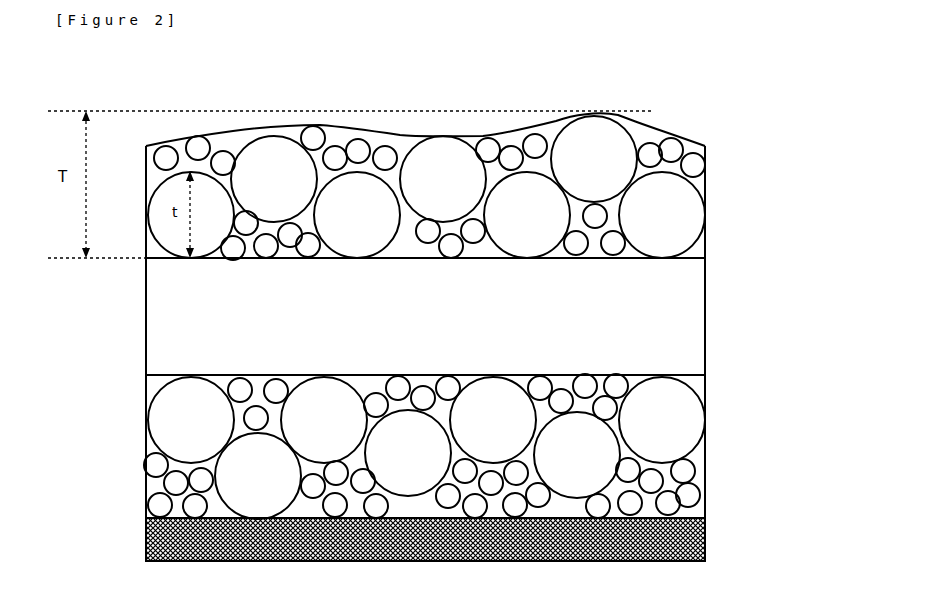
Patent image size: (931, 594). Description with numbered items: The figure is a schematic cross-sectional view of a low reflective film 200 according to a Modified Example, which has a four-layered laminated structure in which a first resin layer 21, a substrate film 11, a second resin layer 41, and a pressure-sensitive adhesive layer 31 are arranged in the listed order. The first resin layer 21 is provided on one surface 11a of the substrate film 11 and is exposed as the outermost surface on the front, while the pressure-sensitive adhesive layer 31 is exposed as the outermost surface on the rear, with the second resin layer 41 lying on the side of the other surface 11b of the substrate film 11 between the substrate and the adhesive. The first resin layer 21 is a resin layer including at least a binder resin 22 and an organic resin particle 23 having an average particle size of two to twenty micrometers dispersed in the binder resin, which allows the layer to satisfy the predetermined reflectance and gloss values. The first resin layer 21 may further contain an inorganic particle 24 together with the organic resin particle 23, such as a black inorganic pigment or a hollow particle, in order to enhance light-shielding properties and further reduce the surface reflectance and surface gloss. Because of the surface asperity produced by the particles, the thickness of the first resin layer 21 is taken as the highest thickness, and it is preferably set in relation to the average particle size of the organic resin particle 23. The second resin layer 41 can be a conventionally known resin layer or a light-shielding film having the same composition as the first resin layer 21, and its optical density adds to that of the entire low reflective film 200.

The low reflective film 200 is at (452, 67).
The substrate film 11 is at (703, 312).
The surface 11a is at (703, 237).
The surface 11b is at (703, 400).
The first resin layer 21 is at (705, 192).
The binder resin 22 is at (392, 135).
The organic resin particle 23 is at (258, 165).
The inorganic particle 24 is at (506, 152).
The second resin layer 41 is at (703, 443).
The pressure-sensitive adhesive layer 31 is at (703, 532).